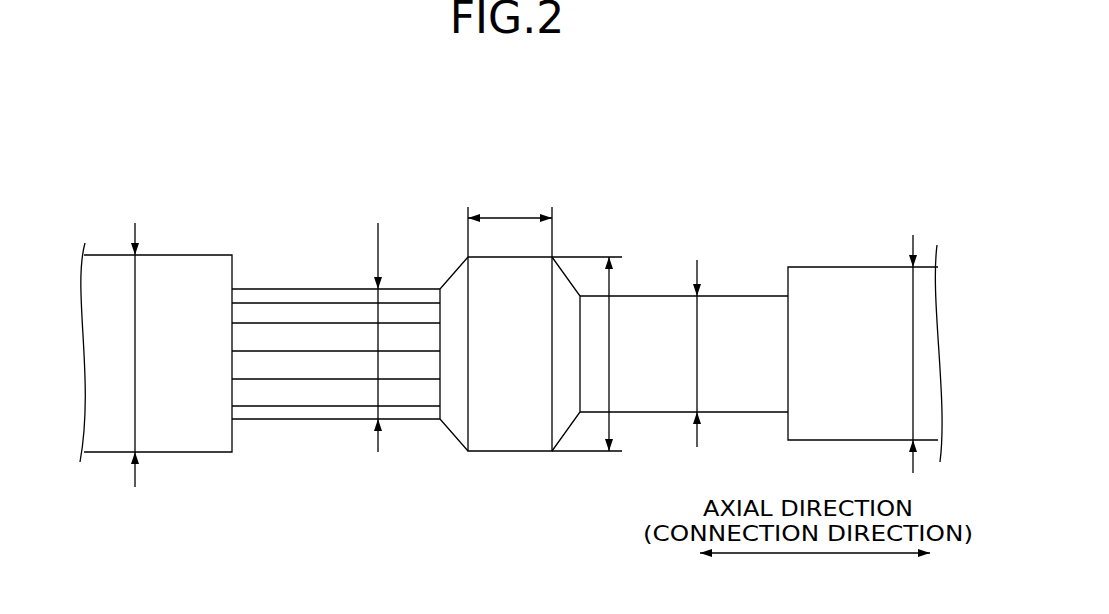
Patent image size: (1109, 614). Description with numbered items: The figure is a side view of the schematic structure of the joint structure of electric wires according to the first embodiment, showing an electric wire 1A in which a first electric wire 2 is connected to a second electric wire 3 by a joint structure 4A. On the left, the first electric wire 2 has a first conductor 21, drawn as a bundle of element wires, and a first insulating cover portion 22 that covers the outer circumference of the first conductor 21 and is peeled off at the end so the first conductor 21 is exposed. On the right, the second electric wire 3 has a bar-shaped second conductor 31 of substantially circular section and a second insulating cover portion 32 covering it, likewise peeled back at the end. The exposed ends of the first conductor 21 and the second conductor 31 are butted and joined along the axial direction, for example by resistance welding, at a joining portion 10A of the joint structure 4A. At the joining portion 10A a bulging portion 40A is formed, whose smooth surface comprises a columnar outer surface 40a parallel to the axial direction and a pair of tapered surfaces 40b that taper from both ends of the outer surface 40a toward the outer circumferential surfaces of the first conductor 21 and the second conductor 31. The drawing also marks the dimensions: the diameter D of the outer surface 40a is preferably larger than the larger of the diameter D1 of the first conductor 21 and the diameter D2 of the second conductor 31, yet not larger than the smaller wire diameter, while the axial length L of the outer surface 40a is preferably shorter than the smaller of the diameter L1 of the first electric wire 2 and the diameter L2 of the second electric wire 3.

The electric wire 1A is at (382, 128).
The first electric wire 2 is at (343, 166).
The first conductor 21 is at (330, 289).
The first insulating cover portion 22 is at (212, 255).
The second electric wire 3 is at (873, 176).
The second conductor 31 is at (742, 296).
The second insulating cover portion 32 is at (855, 267).
The joint structure 4A is at (568, 172).
The joining portion 10A is at (460, 252).
The bulging portion 40A is at (405, 527).
The outer surface 40a is at (505, 435).
The tapered surfaces 40b is at (455, 413).
The length of the outer surface L is at (510, 203).
The diameter of the first electric wire L1 is at (132, 325).
The diameter of the second electric wire L2 is at (913, 325).
The diameter of the outer surface D is at (617, 283).
The diameter of the first conductor D1 is at (378, 325).
The diameter of the second conductor D2 is at (697, 325).